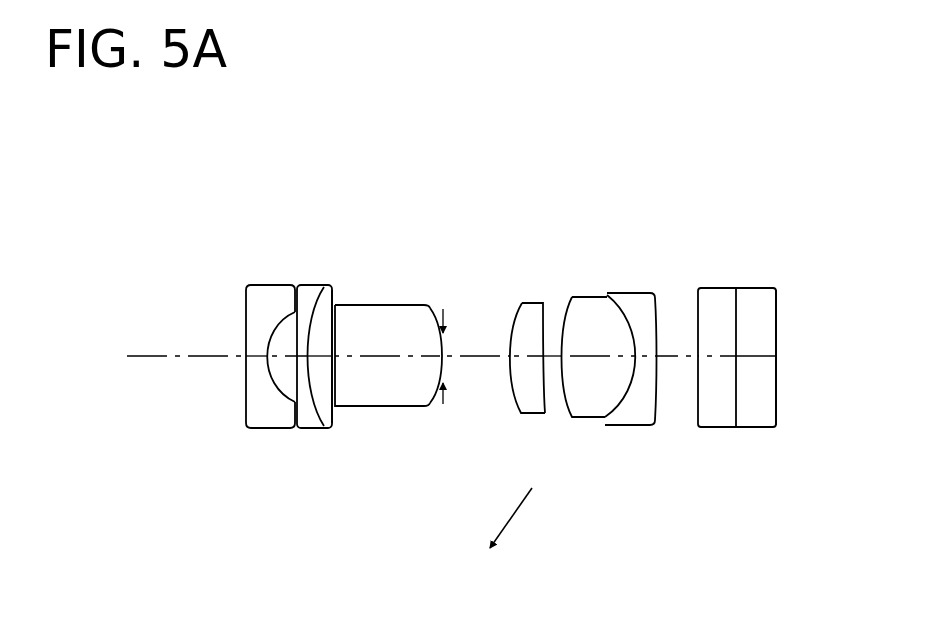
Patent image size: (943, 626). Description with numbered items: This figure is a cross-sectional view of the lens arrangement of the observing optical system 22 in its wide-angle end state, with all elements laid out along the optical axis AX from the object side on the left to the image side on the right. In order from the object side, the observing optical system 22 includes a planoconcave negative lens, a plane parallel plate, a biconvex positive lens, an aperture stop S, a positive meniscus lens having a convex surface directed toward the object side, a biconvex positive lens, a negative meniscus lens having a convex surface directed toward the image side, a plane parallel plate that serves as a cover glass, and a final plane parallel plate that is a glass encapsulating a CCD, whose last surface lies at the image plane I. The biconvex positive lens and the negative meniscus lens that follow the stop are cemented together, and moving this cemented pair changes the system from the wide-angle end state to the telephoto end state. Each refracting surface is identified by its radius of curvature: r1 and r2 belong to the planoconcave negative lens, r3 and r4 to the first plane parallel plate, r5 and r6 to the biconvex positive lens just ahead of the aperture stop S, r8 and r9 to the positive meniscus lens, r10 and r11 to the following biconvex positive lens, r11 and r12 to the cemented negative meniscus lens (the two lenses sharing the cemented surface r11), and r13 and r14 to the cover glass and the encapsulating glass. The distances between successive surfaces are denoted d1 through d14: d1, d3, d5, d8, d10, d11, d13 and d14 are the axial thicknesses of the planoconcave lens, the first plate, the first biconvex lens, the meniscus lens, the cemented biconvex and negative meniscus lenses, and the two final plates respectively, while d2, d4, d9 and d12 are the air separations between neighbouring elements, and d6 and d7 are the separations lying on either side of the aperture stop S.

The observing optical system 22 is at (595, 185).
The optical axis AX is at (146, 355).
The aperture stop S is at (448, 314).
The image plane I is at (778, 325).
The radius of curvature of first lens surface r1 is at (245, 307).
The radius of curvature of second lens surface r2 is at (282, 310).
The radius of curvature of third lens surface r3 is at (305, 300).
The radius of curvature of fourth lens surface r4 is at (334, 300).
The radius of curvature of fifth lens surface r5 is at (340, 332).
The radius of curvature of sixth lens surface r6 is at (440, 313).
The radius of curvature of eighth lens surface r8 is at (505, 322).
The radius of curvature of ninth lens surface r9 is at (550, 313).
The radius of curvature of tenth lens surface r10 is at (582, 307).
The radius of curvature of eleventh lens surface r11 is at (615, 307).
The radius of curvature of twelfth lens surface r12 is at (663, 310).
The radius of curvature of thirteenth lens surface r13 is at (698, 302).
The radius of curvature of fourteenth lens surface r14 is at (737, 293).
The distance between first and second lens surfaces d1 is at (246, 400).
The distance between second and third lens surfaces d2 is at (283, 365).
The distance between third and fourth lens surfaces d3 is at (312, 367).
The distance between fourth and fifth lens surfaces d4 is at (342, 410).
The distance between fifth and sixth lens surfaces d5 is at (380, 358).
The distance between sixth and seventh lens surfaces d6 is at (430, 367).
The distance between seventh and eighth lens surfaces d7 is at (483, 358).
The distance between eighth and ninth lens surfaces d8 is at (525, 357).
The distance between ninth and tenth lens surfaces d9 is at (548, 358).
The distance between tenth and eleventh lens surfaces d10 is at (592, 360).
The distance between eleventh and twelfth lens surfaces d11 is at (638, 360).
The distance between twelfth and thirteenth lens surfaces d12 is at (675, 358).
The distance between thirteenth and fourteenth lens surfaces d13 is at (717, 358).
The distance between fourteenth lens surface and image d14 is at (750, 358).